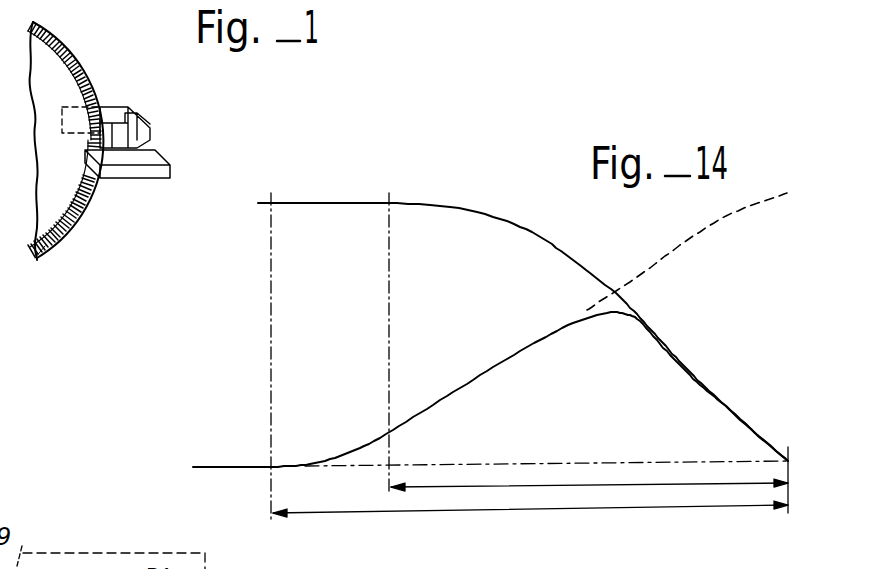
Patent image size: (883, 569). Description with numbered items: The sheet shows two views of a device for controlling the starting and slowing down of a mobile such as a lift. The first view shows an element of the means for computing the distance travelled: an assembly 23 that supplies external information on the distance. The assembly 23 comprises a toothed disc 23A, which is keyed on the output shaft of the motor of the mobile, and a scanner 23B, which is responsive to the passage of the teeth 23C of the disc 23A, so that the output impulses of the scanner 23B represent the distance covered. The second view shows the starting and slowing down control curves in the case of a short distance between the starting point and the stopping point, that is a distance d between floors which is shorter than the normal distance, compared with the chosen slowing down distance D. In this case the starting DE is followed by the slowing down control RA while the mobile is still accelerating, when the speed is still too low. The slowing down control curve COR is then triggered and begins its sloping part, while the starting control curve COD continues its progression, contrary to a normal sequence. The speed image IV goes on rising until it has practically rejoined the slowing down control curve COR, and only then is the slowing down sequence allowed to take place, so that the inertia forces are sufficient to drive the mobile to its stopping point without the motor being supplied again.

In FIG. 1, the assembly 23 is at (152, 114).
In FIG. 1, the toothed disc 23A is at (65, 197).
In FIG. 1, the scanner 23B is at (150, 156).
In FIG. 1, the teeth 23C is at (64, 54).
In FIG. 14, the slowing down control curve COR is at (538, 236).
In FIG. 14, the starting control curve COD is at (687, 244).
In FIG. 14, the speed image IV is at (687, 344).
In FIG. 14, the starting DE is at (273, 352).
In FIG. 14, the slowing down control RA is at (391, 316).
In FIG. 14, the distance between floors d is at (589, 476).
In FIG. 14, the slowing down distance D is at (530, 499).